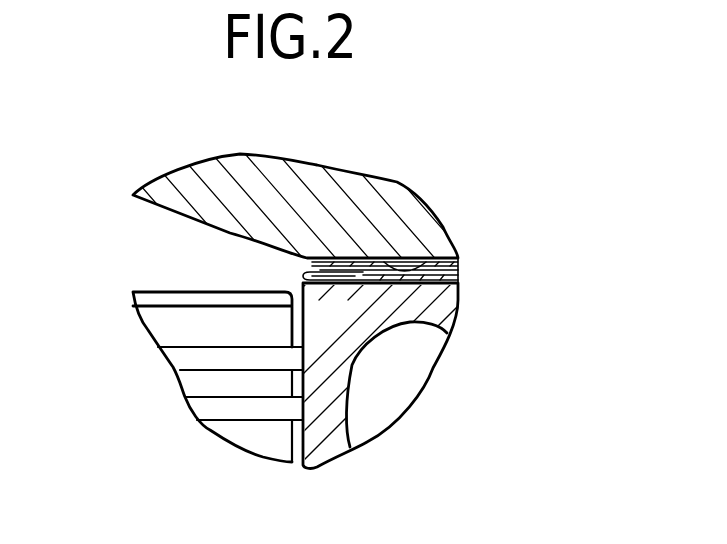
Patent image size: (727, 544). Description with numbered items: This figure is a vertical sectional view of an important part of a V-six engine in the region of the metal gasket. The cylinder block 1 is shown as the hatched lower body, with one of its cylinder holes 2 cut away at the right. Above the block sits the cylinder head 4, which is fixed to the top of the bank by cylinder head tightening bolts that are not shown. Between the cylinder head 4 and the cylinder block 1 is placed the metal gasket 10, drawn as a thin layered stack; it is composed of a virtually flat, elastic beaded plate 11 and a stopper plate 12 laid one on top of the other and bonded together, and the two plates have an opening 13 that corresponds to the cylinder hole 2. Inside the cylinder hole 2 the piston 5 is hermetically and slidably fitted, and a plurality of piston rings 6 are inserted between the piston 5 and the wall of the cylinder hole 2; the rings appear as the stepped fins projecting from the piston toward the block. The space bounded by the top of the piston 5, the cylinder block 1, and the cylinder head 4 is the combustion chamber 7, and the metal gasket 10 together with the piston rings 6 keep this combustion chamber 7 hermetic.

The cylinder block 1 is at (446, 310).
The cylinder hole 2 is at (300, 431).
The cylinder head 4 is at (375, 194).
The piston 5 is at (222, 430).
The piston rings 6 is at (198, 408).
The combustion chamber 7 is at (171, 260).
The metal gasket 10 is at (392, 262).
The beaded plate 11 is at (458, 256).
The stopper plate 12 is at (458, 270).
The opening 13 is at (308, 272).